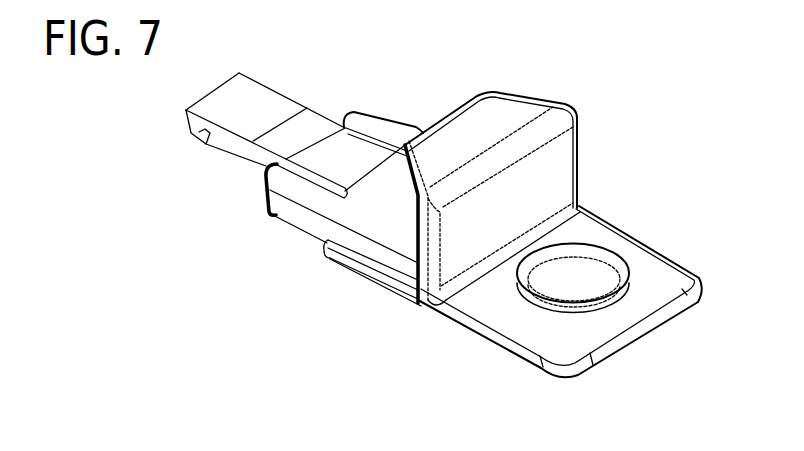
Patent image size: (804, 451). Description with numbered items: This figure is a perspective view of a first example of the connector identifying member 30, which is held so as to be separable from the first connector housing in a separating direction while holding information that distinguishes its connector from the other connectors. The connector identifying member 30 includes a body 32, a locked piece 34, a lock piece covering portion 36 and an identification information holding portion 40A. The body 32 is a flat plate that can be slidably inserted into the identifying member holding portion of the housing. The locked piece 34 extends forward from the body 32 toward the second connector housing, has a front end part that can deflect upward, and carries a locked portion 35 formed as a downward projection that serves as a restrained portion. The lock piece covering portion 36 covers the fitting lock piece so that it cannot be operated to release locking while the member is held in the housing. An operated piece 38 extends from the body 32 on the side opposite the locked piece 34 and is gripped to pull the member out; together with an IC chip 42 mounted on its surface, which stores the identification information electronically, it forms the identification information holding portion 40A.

The connector identifying member 30 is at (560, 64).
The body 32 is at (293, 218).
The locked piece 34 is at (258, 91).
The locked portion 35 is at (202, 136).
The lock piece covering portion 36 is at (455, 122).
The operated piece 38 is at (621, 318).
The identification information holding portion 40A is at (496, 364).
The IC chip 42 is at (588, 252).